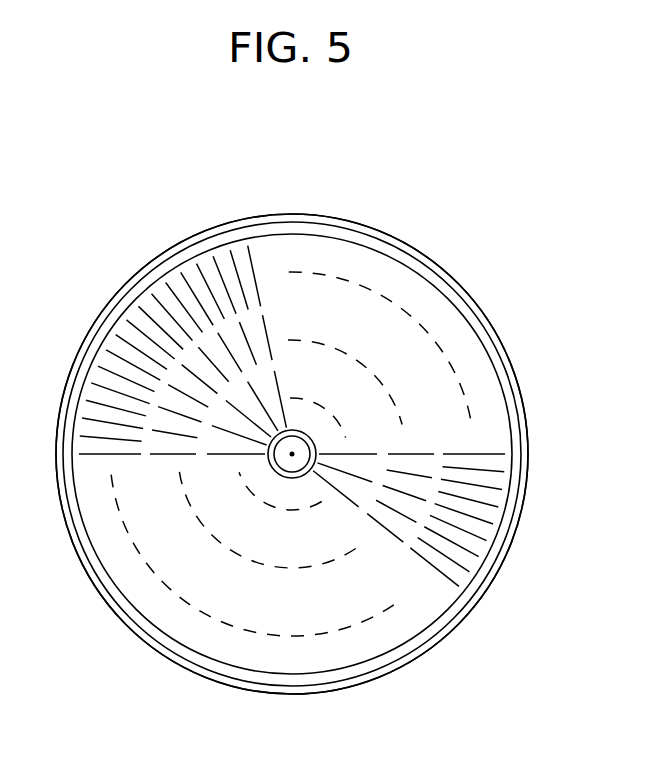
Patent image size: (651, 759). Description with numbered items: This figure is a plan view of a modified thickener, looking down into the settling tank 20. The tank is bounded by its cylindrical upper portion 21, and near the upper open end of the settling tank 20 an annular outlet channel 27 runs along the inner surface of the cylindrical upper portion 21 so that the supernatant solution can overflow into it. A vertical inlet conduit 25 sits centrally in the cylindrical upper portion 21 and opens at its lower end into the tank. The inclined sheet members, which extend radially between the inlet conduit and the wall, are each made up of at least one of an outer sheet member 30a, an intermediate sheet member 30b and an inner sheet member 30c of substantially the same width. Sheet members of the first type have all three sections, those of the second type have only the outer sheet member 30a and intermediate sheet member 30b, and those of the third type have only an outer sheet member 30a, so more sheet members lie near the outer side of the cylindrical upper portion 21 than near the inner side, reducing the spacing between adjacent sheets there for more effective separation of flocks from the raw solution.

The settling tank 20 is at (88, 235).
The cylindrical upper portion 21 is at (427, 652).
The annular outlet channel 27 is at (513, 423).
The vertical inlet conduit 25 is at (292, 470).
The outer sheet member 30a is at (250, 268).
The intermediate sheet member 30b is at (265, 325).
The inner sheet member 30c is at (280, 388).